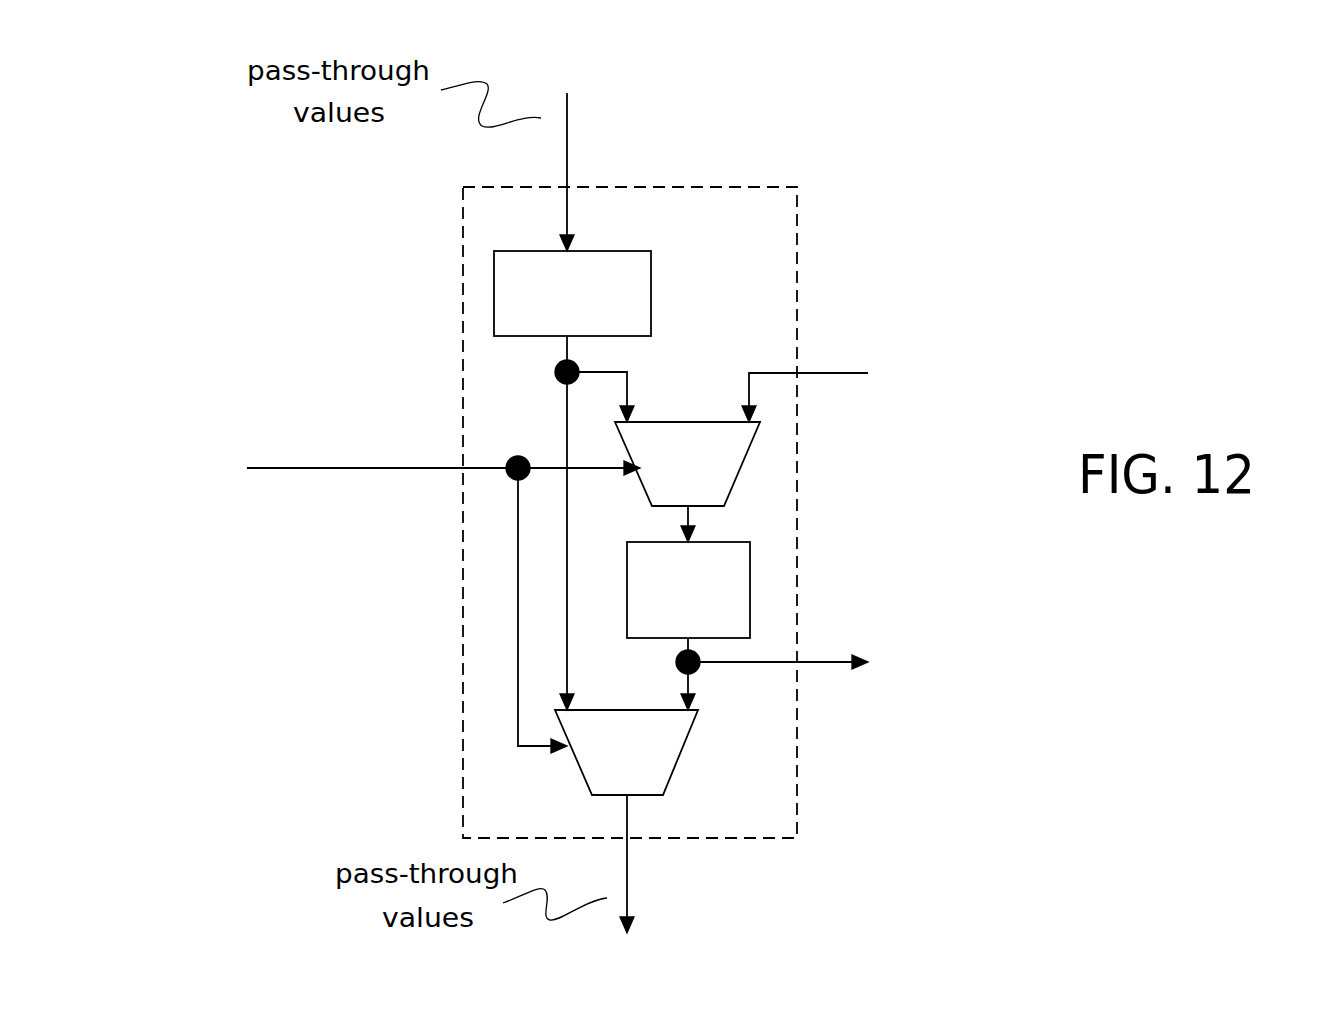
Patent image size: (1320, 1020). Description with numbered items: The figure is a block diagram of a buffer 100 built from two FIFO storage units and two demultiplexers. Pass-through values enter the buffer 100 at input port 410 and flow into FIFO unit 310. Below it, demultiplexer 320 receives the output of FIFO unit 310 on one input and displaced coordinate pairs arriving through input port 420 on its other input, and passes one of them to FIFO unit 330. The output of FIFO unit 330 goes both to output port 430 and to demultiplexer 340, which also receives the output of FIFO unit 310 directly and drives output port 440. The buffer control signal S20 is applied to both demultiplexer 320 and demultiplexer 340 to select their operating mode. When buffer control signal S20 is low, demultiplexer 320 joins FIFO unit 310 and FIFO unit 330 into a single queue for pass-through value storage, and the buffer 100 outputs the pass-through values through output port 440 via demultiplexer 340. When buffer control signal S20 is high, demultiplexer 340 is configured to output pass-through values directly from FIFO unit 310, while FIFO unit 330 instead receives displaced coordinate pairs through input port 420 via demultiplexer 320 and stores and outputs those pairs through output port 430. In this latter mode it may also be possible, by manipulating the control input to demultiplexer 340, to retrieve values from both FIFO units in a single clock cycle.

The buffer 100 is at (770, 253).
The FIFO unit 310 is at (636, 307).
The demultiplexer 320 is at (713, 490).
The FIFO unit 330 is at (712, 623).
The demultiplexer 340 is at (651, 778).
The input port 410 is at (582, 175).
The input port 420 is at (810, 362).
The output port 430 is at (810, 655).
The output port 440 is at (632, 850).
The buffer control signal S20 is at (443, 544).